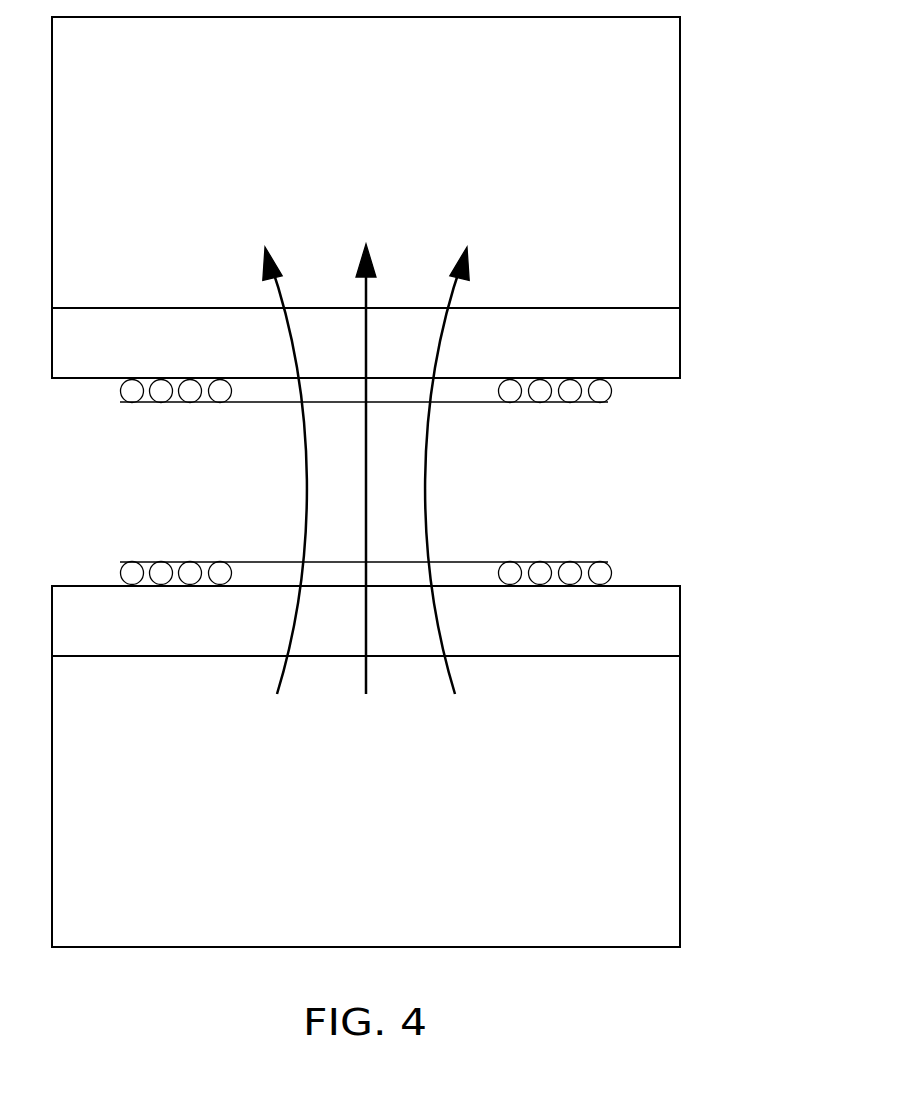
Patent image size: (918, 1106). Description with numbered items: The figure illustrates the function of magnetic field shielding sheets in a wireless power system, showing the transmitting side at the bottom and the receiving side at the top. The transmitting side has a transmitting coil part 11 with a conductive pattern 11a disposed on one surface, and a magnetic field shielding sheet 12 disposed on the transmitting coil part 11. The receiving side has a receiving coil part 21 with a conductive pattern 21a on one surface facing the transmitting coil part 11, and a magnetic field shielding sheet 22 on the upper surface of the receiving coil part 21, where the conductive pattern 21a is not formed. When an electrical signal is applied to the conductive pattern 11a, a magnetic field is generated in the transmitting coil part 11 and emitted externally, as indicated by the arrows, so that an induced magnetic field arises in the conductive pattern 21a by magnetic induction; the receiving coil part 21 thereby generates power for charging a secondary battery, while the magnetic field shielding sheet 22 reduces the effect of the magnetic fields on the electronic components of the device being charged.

The magnetic field shielding sheet 22 is at (703, 155).
The receiving coil part 21 is at (703, 337).
The conductive pattern 21a is at (622, 422).
The conductive pattern 11a is at (622, 545).
The transmitting coil part 11 is at (703, 617).
The magnetic field shielding sheet 12 is at (703, 797).